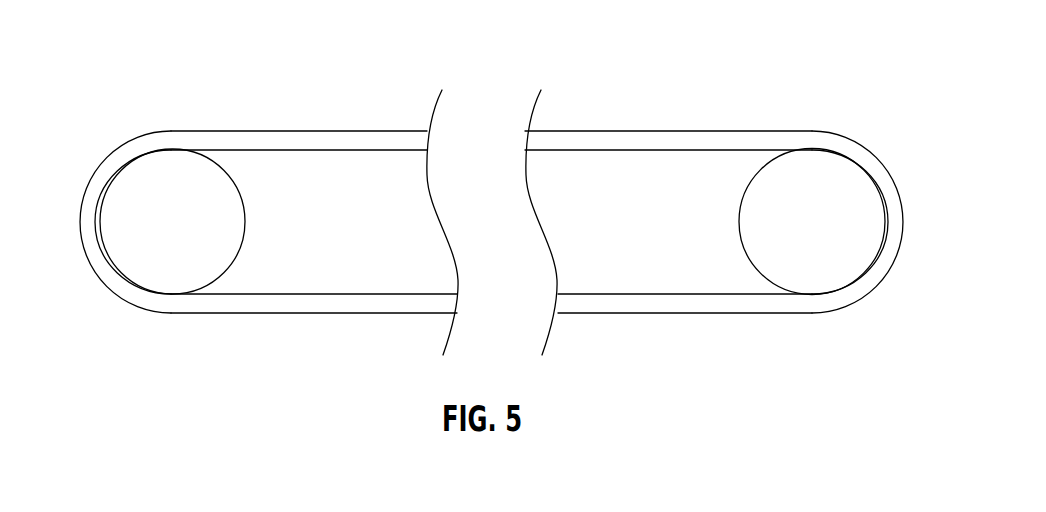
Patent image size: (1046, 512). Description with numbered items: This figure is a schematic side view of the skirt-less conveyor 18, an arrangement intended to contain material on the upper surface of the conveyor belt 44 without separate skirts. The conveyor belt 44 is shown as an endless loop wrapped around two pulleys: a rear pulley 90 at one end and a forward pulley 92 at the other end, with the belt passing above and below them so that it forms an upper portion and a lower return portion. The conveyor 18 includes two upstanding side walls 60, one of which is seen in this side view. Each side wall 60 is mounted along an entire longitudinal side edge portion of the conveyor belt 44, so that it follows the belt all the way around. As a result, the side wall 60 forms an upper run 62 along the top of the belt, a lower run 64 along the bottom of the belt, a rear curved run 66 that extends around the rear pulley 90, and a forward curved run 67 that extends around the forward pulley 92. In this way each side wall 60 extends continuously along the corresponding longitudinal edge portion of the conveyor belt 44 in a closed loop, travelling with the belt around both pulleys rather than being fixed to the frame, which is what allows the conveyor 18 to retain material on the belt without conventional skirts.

The conveyor 18 is at (584, 48).
The conveyor belt 44 is at (721, 149).
The side wall 60 is at (674, 131).
The upper run 62 is at (368, 130).
The lower run 64 is at (611, 314).
The rear curved run 66 is at (903, 224).
The forward curved run 67 is at (80, 222).
The rear pulley 90 is at (752, 263).
The forward pulley 92 is at (232, 263).